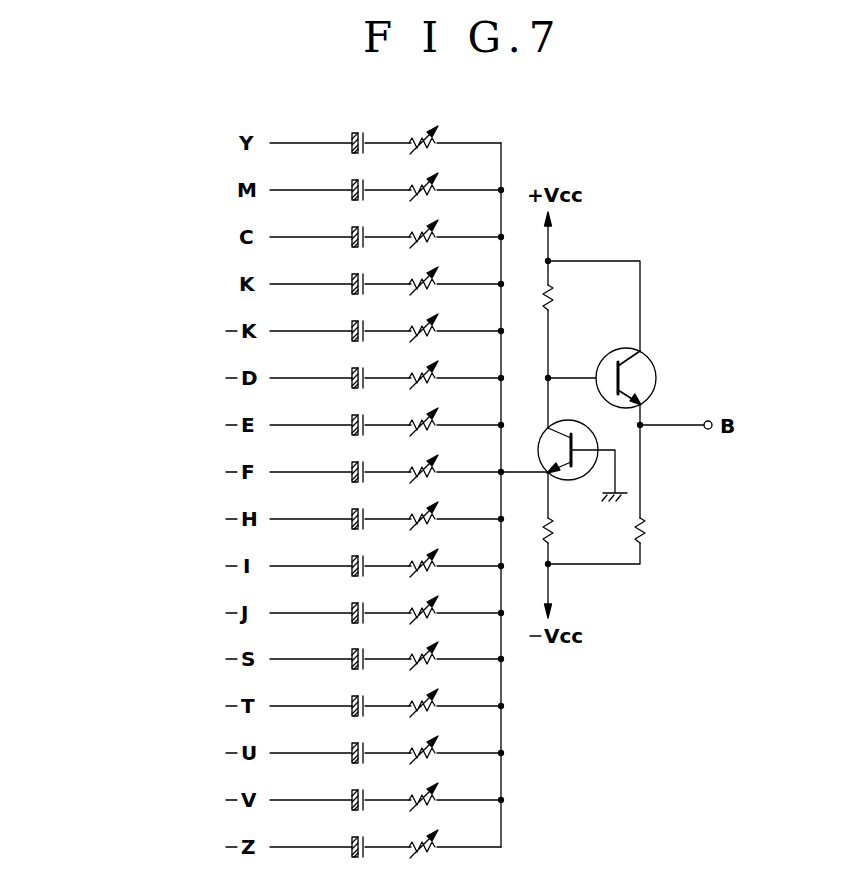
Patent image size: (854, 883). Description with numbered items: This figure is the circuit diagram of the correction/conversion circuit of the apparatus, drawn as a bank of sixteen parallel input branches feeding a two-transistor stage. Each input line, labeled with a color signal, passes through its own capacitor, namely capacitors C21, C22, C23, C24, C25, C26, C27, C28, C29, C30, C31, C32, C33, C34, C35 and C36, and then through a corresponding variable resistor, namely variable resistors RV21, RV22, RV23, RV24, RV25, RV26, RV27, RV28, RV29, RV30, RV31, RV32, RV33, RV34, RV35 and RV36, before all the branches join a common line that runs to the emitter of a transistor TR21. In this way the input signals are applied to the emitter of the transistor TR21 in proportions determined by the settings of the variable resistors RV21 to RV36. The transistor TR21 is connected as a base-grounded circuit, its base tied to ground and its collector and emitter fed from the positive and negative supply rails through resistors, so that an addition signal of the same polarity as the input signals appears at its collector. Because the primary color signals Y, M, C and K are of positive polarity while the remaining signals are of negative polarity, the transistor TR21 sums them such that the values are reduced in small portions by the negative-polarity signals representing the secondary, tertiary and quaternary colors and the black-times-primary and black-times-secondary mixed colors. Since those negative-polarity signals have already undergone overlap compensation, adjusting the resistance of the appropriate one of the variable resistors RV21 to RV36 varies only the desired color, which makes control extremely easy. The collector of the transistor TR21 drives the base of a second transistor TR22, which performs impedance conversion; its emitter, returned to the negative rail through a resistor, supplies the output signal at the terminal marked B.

The capacitor C21 is at (343, 133).
The capacitor C22 is at (343, 180).
The capacitor C23 is at (343, 227).
The capacitor C24 is at (343, 274).
The capacitor C25 is at (343, 321).
The capacitor C26 is at (343, 368).
The capacitor C27 is at (343, 415).
The capacitor C28 is at (343, 462).
The capacitor C29 is at (343, 509).
The capacitor C30 is at (343, 556).
The capacitor C31 is at (343, 603).
The capacitor C32 is at (343, 649).
The capacitor C33 is at (343, 696).
The capacitor C34 is at (343, 743).
The capacitor C35 is at (343, 790).
The capacitor C36 is at (343, 837).
The variable resistor RV21 is at (449, 135).
The variable resistor RV22 is at (449, 182).
The variable resistor RV23 is at (449, 229).
The variable resistor RV24 is at (449, 276).
The variable resistor RV25 is at (449, 323).
The variable resistor RV26 is at (449, 370).
The variable resistor RV27 is at (449, 417).
The variable resistor RV28 is at (449, 464).
The variable resistor RV29 is at (449, 511).
The variable resistor RV30 is at (449, 558).
The variable resistor RV31 is at (449, 605).
The variable resistor RV32 is at (449, 651).
The variable resistor RV33 is at (449, 698).
The variable resistor RV34 is at (449, 745).
The variable resistor RV35 is at (449, 792).
The variable resistor RV36 is at (449, 839).
The transistor TR21 is at (582, 447).
The transistor TR22 is at (648, 368).